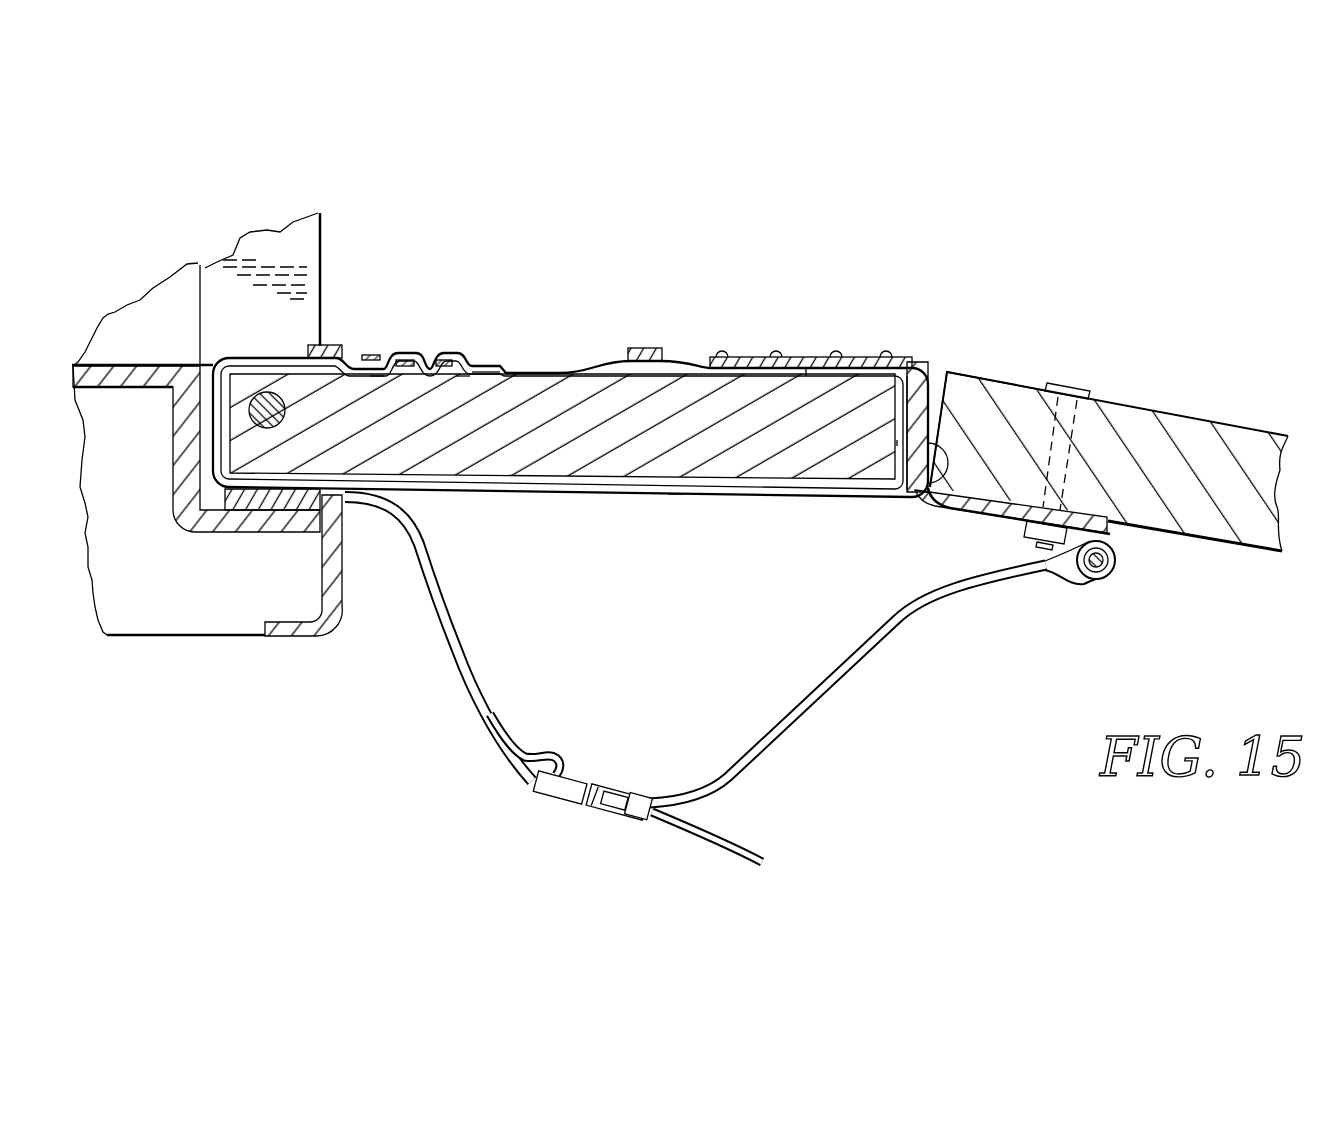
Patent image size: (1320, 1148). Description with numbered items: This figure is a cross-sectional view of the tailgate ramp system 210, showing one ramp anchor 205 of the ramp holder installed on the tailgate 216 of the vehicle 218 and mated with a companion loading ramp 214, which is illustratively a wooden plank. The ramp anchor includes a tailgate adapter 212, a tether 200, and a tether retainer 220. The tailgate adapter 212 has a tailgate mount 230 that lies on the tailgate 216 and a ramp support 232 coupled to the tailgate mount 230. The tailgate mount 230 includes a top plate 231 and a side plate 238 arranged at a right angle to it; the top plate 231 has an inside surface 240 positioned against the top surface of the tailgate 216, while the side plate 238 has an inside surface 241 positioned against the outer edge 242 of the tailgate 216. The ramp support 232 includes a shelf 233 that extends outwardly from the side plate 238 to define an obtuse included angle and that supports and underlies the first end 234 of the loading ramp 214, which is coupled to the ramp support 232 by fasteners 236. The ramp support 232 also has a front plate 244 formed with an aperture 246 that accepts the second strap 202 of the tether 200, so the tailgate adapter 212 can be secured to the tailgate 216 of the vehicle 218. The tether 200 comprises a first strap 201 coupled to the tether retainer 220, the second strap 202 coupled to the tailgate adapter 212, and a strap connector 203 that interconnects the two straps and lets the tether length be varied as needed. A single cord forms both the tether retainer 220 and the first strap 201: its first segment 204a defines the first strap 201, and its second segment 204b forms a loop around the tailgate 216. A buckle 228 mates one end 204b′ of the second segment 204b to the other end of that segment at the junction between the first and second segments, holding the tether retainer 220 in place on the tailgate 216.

The tether 200 is at (752, 782).
The first strap 201 is at (233, 355).
The second strap 202 is at (850, 652).
The strap connector 203 is at (570, 800).
The first segment 204a is at (272, 351).
The second segment 204b is at (676, 497).
The one end of second segment 204b′ is at (463, 376).
The ramp anchor 205 is at (505, 357).
The tailgate ramp system 210 is at (829, 268).
The tailgate adapter 212 is at (907, 347).
The loading ramp 214 is at (1188, 438).
The tailgate 216 is at (718, 470).
The vehicle 218 is at (347, 312).
The tether retainer 220 is at (558, 365).
The buckle 228 is at (422, 347).
The tailgate mount 230 is at (742, 352).
The top plate 231 is at (797, 360).
The ramp support 232 is at (1040, 546).
The shelf 233 is at (1007, 537).
The first end 234 is at (1010, 382).
The fasteners 236 is at (1100, 378).
The side plate 238 is at (950, 407).
The inside surface 240 is at (810, 377).
The inside surface 241 is at (902, 443).
The outer edge 242 is at (945, 500).
The front plate 244 is at (1097, 580).
The aperture 246 is at (1125, 560).